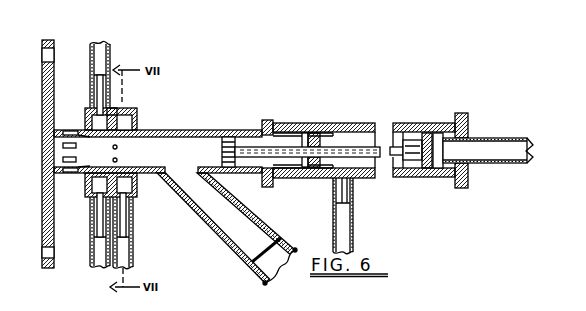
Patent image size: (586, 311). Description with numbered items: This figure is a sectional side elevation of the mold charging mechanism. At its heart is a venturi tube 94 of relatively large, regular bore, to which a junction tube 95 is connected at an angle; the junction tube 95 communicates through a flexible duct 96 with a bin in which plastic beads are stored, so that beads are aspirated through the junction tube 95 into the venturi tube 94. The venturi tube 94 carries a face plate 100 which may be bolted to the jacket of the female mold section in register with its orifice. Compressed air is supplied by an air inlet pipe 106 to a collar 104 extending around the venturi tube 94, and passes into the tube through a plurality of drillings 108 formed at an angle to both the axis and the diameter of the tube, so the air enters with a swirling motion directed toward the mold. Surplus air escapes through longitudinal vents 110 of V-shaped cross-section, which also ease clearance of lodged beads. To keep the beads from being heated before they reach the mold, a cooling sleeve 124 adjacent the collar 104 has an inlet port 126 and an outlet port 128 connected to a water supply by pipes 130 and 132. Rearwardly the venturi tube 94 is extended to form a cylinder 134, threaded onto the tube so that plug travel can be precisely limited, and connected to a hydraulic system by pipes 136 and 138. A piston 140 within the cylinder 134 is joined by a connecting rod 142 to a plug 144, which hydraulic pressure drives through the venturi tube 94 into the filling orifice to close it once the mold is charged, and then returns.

The venturi tube 94 is at (184, 131).
The junction tube 95 is at (205, 223).
The flexible duct 96 is at (254, 270).
The face plate 100 is at (42, 41).
The collar 104 is at (137, 122).
The air inlet pipe 106 is at (133, 264).
The drillings 108 is at (117, 148).
The longitudinal vents 110 is at (76, 145).
The cooling sleeve 124 is at (114, 109).
The inlet port 126 is at (102, 108).
The outlet port 128 is at (97, 198).
The pipe 130 is at (110, 58).
The pipe 132 is at (90, 265).
The cylinder 134 is at (337, 123).
The pipe 136 is at (515, 137).
The pipe 138 is at (356, 233).
The piston 140 is at (437, 123).
The connecting rod 142 is at (242, 145).
The plug 144 is at (221, 148).